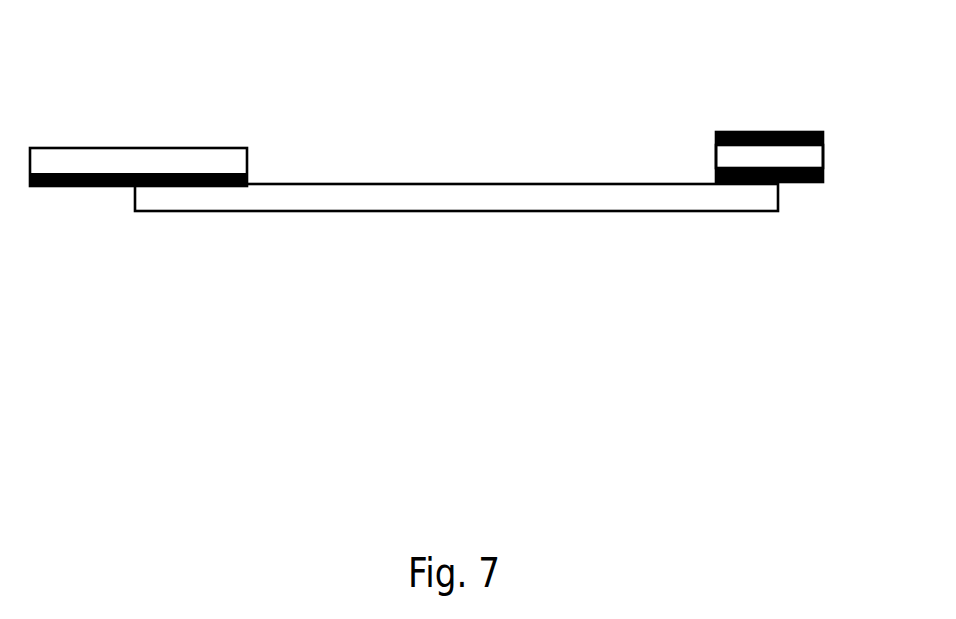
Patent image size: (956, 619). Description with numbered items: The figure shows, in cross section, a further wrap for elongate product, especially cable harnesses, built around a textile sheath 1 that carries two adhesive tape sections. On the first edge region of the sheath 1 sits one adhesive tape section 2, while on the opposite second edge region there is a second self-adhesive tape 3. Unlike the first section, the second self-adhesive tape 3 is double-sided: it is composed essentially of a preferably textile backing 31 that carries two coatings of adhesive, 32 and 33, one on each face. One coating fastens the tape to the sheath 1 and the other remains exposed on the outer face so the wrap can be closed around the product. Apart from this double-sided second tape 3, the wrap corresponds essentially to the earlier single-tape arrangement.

The textile sheath 1 is at (423, 196).
The adhesive tape section 2 is at (97, 162).
The second self-adhesive tape 3 is at (770, 153).
The textile backing 31 is at (733, 155).
The adhesive coating 32 is at (823, 182).
The adhesive coating 33 is at (823, 132).